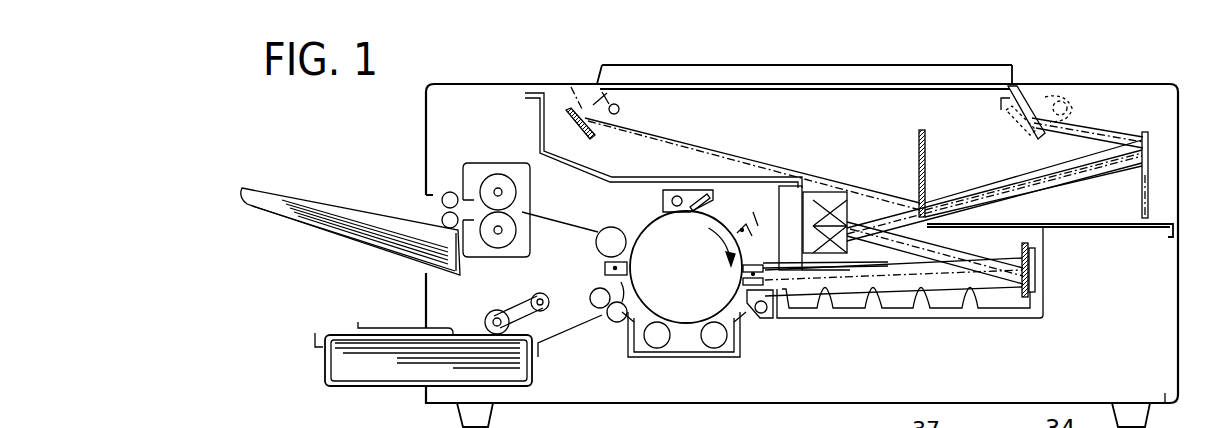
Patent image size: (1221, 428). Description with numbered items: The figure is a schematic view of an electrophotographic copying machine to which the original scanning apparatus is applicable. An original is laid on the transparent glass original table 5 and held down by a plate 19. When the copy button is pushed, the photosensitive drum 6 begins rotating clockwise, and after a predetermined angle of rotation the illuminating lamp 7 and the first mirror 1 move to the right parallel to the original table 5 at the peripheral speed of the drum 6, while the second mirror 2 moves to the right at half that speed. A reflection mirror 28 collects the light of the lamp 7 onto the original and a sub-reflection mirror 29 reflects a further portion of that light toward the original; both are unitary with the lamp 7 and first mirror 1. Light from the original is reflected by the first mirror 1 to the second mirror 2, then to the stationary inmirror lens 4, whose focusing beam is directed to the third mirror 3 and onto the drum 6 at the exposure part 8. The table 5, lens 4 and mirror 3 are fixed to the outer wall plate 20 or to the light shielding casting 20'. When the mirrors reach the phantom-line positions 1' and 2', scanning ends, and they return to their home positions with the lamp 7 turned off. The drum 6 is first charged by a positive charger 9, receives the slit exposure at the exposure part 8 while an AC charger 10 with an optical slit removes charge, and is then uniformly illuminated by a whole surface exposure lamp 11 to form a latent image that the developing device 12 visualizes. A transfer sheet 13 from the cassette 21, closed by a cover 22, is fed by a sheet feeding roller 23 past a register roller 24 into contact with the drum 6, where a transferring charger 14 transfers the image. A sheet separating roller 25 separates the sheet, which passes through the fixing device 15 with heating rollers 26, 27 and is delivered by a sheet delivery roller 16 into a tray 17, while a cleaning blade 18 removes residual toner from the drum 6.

The first mirror 1 is at (743, 148).
The end position of first mirror 1' is at (1055, 117).
The second mirror 2 is at (1008, 167).
The end position of second mirror 2' is at (1174, 175).
The third mirror 3 is at (1035, 269).
The inmirror lens 4 is at (828, 190).
The original table 5 is at (797, 83).
The photosensitive drum 6 is at (648, 220).
The illuminating lamp 7 is at (622, 110).
The exposure part 8 is at (743, 276).
The positive charger 9 is at (748, 223).
The AC charger 10 is at (755, 264).
The whole surface exposure lamp 11 is at (760, 318).
The developing device 12 is at (690, 357).
The transfer sheet 13 is at (405, 362).
The transferring charger 14 is at (604, 270).
The fixing device 15 is at (475, 163).
The sheet delivery roller 16 is at (447, 192).
The tray 17 is at (357, 214).
The cleaning blade 18 is at (697, 188).
The plate 19 is at (925, 65).
The outer wall plate 20 is at (802, 230).
The light shielding casting 20' is at (910, 330).
The cassette 21 is at (323, 366).
The cover of the cassette 22 is at (347, 328).
The sheet feeding roller 23 is at (495, 311).
The register roller 24 is at (617, 318).
The sheet separating roller 25 is at (597, 246).
The heating roller 26 is at (505, 191).
The heating roller 27 is at (505, 231).
The reflection mirror 28 is at (619, 108).
The sub-reflection mirror 29 is at (565, 111).